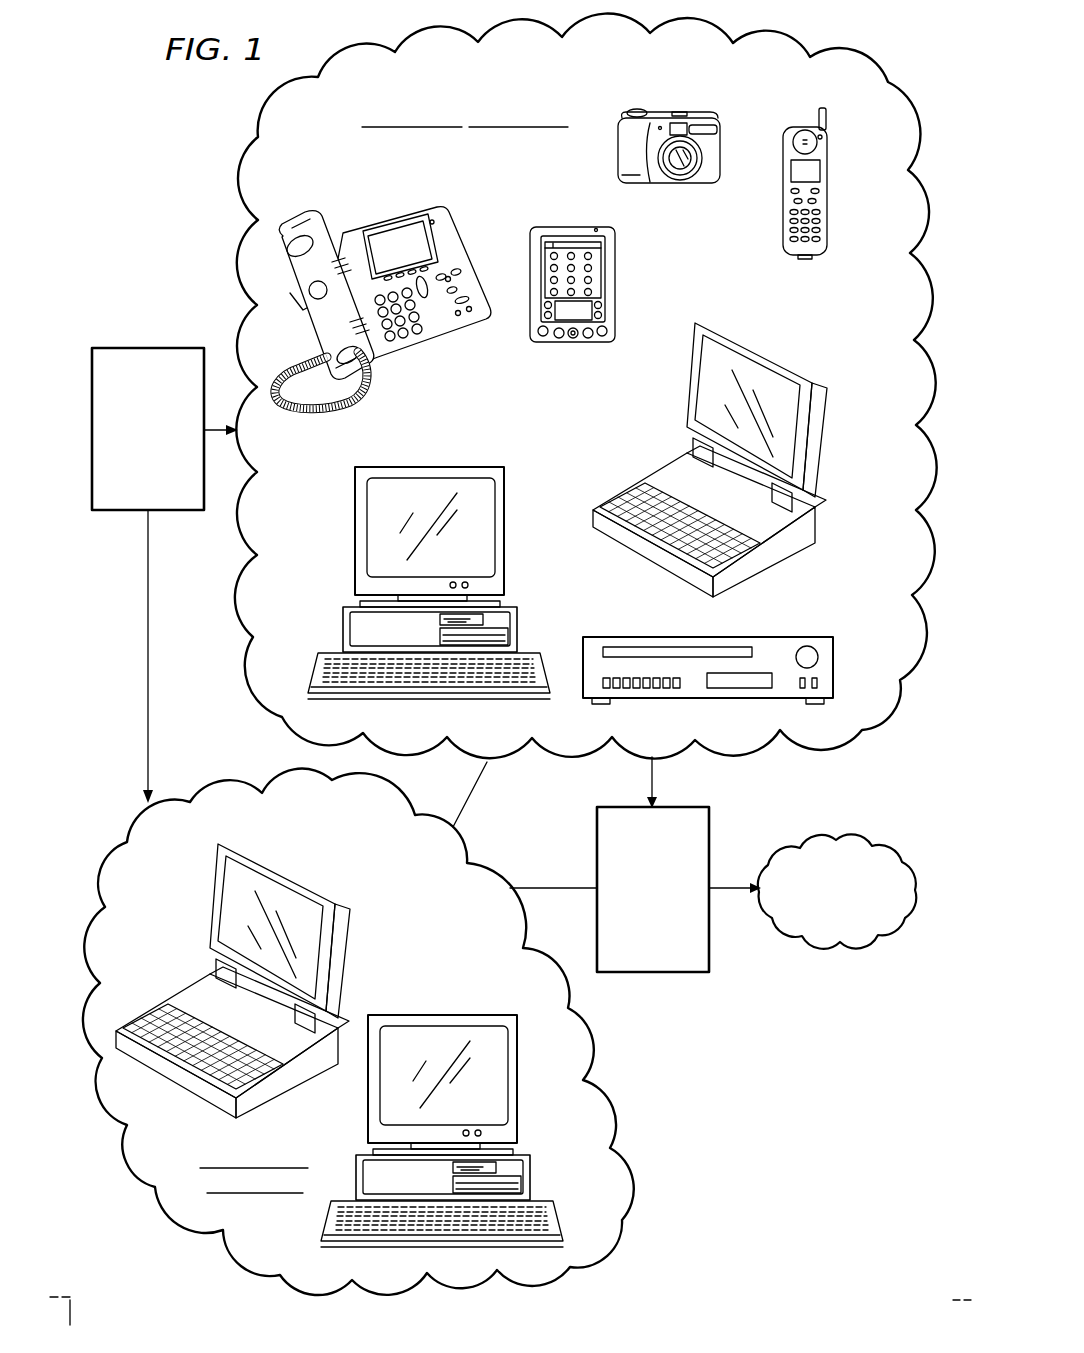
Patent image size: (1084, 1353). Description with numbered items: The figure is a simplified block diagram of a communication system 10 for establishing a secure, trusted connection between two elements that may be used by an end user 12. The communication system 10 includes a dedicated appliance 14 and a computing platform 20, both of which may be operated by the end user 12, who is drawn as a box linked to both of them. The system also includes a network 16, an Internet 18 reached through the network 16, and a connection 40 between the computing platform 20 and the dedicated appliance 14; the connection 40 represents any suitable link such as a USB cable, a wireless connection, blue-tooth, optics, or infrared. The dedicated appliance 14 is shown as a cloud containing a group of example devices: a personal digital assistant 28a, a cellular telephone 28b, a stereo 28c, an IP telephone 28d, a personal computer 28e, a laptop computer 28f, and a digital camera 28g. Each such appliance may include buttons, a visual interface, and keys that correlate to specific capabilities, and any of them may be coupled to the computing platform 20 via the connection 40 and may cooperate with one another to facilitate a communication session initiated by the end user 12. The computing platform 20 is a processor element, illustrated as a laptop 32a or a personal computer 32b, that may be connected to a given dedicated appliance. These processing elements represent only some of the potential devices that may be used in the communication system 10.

The communication system 10 is at (807, 1123).
The end user 12 is at (132, 347).
The dedicated appliance 14 is at (345, 38).
The network 16 is at (674, 973).
The Internet 18 is at (858, 942).
The computing platform 20 is at (630, 1124).
The personal digital assistant 28a is at (566, 226).
The cellular telephone 28b is at (829, 205).
The stereo 28c is at (836, 667).
The IP telephone 28d is at (386, 216).
The personal computer 28e is at (354, 531).
The laptop computer 28f is at (769, 352).
The digital camera 28g is at (698, 110).
The laptop 32a is at (291, 875).
The personal computer 32b is at (441, 1013).
The connection 40 is at (473, 797).